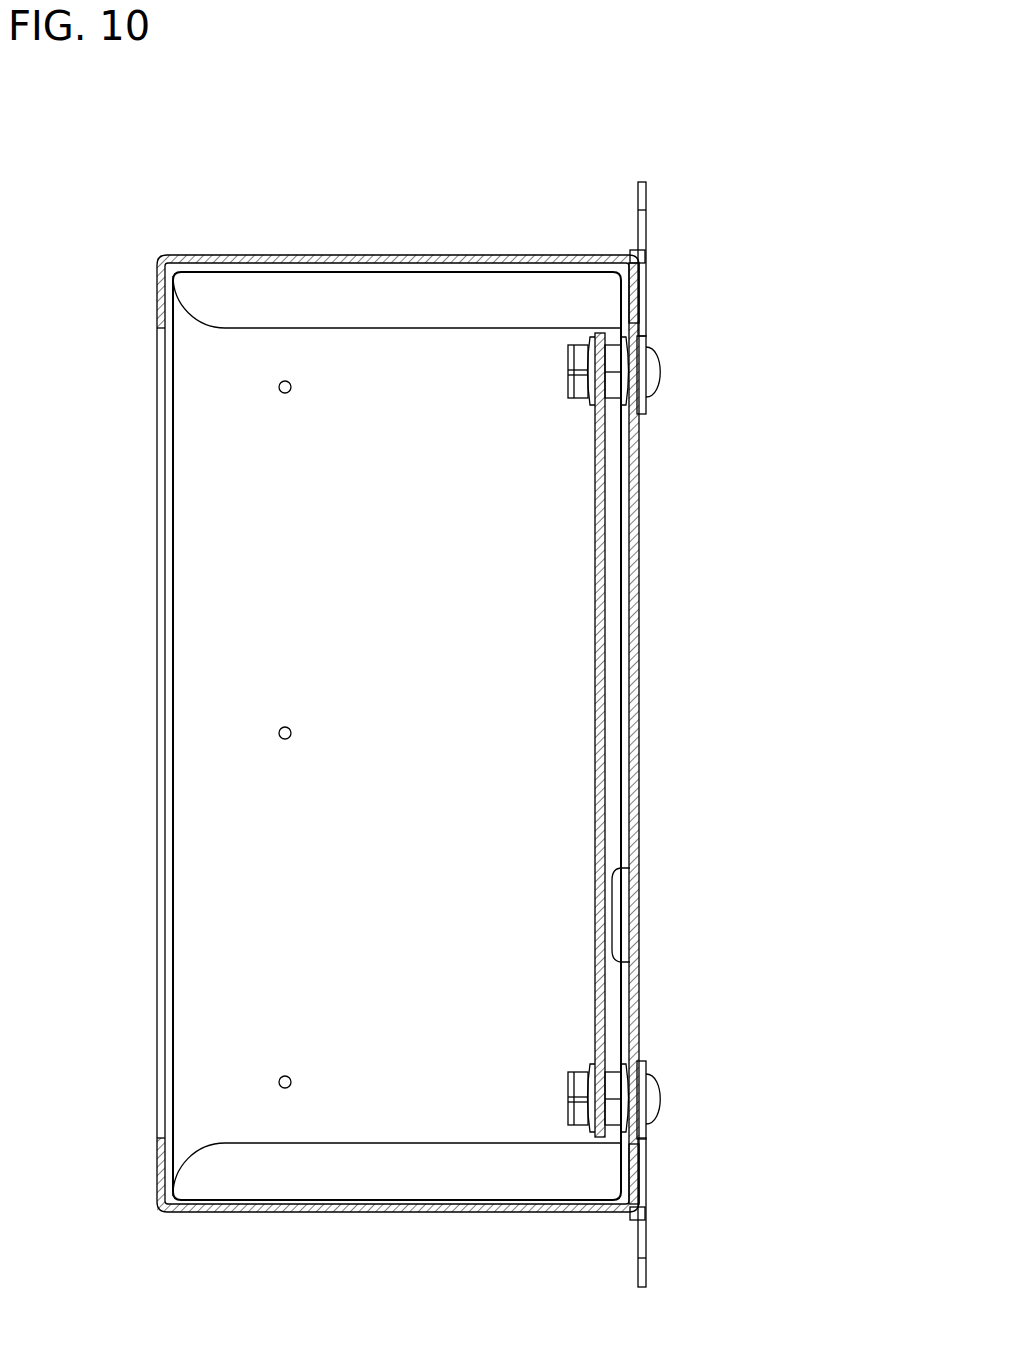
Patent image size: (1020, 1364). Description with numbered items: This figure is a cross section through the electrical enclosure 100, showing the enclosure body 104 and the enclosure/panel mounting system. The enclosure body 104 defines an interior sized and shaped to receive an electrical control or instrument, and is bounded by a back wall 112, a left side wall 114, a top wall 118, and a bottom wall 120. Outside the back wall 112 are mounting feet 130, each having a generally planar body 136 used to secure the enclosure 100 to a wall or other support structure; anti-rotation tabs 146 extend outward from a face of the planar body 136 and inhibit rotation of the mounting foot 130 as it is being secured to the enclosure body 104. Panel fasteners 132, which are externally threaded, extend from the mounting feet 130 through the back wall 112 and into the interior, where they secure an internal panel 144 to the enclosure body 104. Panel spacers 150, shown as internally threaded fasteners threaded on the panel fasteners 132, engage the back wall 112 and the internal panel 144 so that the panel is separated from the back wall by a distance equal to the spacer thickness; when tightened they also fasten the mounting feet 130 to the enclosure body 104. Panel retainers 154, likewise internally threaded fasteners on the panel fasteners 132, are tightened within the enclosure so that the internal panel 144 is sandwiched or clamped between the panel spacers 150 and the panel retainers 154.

The electrical enclosure 100 is at (446, 130).
The enclosure body 104 is at (350, 252).
The back wall 112 is at (641, 535).
The left side wall 114 is at (390, 548).
The top wall 118 is at (495, 254).
The bottom wall 120 is at (322, 1213).
The mounting foot 130 is at (660, 183).
The panel fastener 132 is at (651, 358).
The planar body 136 is at (648, 294).
The internal panel 144 is at (598, 530).
The anti-rotation tab 146 is at (646, 257).
The panel spacer 150 is at (612, 396).
The panel retainer 154 is at (578, 399).